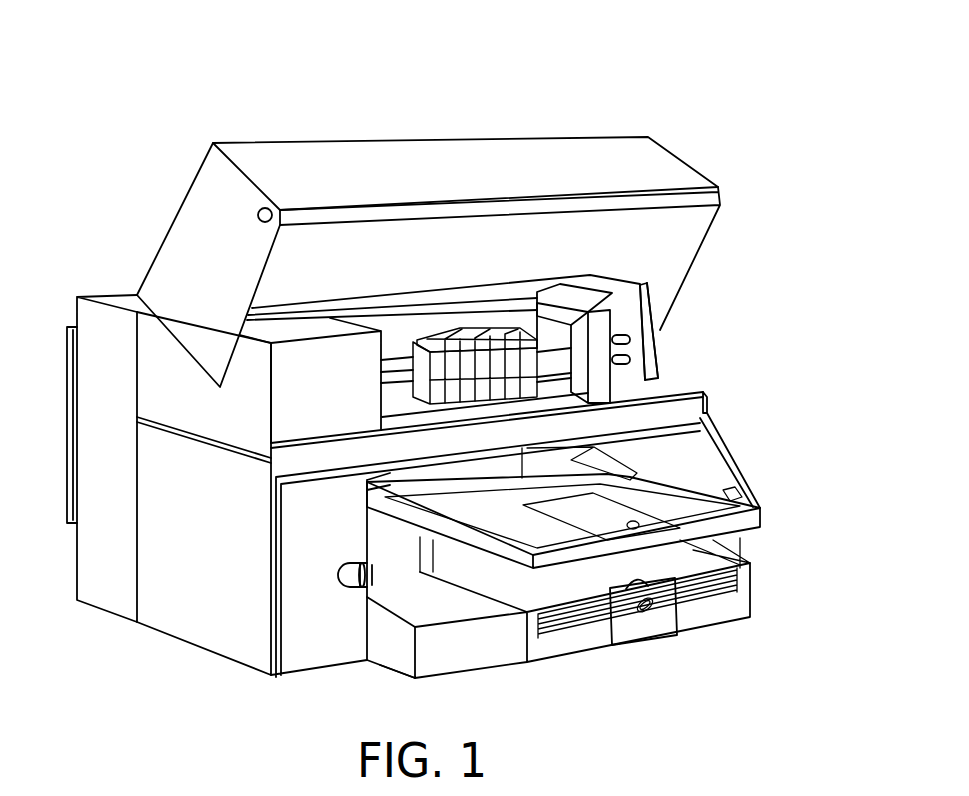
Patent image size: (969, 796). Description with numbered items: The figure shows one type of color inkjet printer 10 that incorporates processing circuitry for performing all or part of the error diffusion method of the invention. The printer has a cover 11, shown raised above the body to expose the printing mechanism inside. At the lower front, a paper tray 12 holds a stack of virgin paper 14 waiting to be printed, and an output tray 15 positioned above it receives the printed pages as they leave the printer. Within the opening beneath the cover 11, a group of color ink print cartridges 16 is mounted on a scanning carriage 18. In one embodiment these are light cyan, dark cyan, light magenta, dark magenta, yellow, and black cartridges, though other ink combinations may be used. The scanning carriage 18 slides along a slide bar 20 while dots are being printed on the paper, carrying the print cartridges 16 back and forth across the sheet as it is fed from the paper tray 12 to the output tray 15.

The color inkjet printer 10 is at (550, 90).
The cover 11 is at (177, 216).
The paper tray 12 is at (570, 638).
The virgin paper 14 is at (753, 587).
The output tray 15 is at (745, 489).
The color ink print cartridges 16 is at (438, 370).
The scanning carriage 18 is at (423, 390).
The slide bar 20 is at (640, 367).